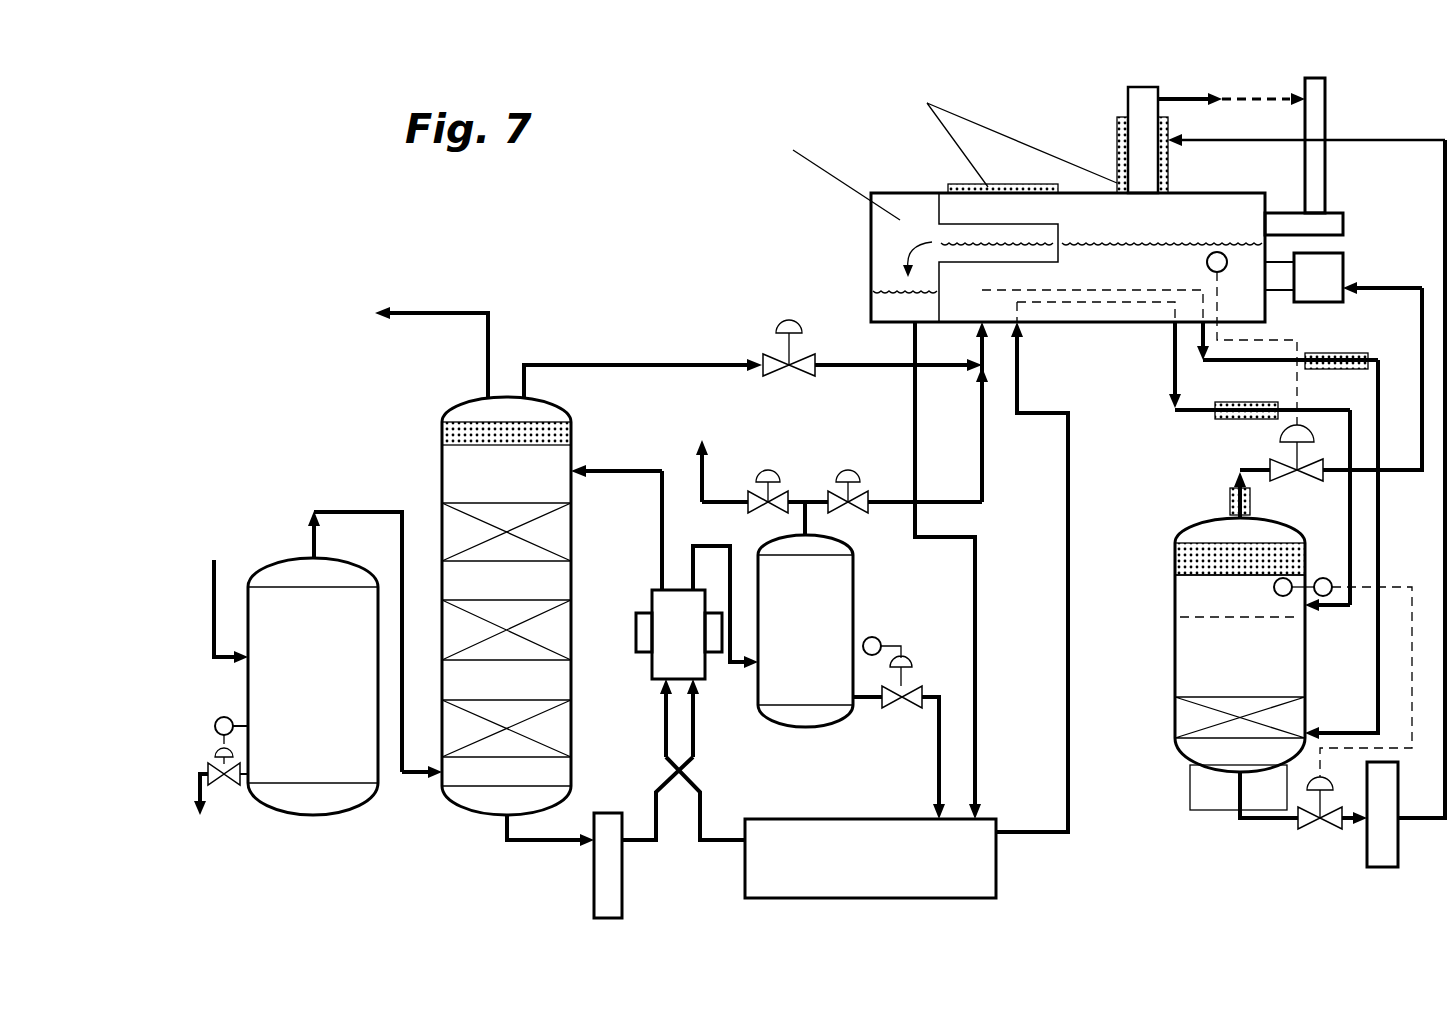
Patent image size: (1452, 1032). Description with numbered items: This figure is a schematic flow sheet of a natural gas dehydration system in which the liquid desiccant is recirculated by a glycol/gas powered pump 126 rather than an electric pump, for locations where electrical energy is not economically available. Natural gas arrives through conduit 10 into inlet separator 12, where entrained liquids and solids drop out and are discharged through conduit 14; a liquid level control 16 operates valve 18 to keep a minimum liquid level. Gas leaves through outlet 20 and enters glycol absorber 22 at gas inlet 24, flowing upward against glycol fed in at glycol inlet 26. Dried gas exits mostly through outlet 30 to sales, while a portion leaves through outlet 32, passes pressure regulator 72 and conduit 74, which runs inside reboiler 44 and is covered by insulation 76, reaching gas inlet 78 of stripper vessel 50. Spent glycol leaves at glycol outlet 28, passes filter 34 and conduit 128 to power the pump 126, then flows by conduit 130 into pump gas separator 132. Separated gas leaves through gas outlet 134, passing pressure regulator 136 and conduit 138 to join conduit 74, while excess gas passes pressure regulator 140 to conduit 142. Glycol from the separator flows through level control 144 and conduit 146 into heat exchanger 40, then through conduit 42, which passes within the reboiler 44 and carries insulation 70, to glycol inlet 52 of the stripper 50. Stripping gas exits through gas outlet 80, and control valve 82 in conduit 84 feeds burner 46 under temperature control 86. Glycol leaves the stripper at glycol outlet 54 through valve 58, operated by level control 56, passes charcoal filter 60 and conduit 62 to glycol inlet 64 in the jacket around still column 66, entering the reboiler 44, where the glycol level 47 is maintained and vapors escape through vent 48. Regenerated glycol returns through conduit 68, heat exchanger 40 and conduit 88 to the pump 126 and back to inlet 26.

The conduit 10 is at (212, 606).
The inlet separator 12 is at (285, 560).
The conduit 14 is at (198, 795).
The liquid level control 16 is at (217, 720).
The valve 18 is at (242, 776).
The outlet 20 is at (318, 548).
The glycol absorber 22 is at (440, 480).
The gas inlet 24 is at (410, 777).
The glycol inlet 26 is at (607, 475).
The glycol outlet 28 is at (503, 831).
The outlet 30 is at (485, 372).
The outlet 32 is at (638, 360).
The filter 34 is at (615, 823).
The heat exchanger 40 is at (797, 816).
The conduit 42 is at (1133, 302).
The reboiler 44 is at (905, 202).
The burner 46 is at (1325, 270).
The level of glycol 47 is at (1102, 242).
The vent 48 is at (1318, 115).
The stripper vessel 50 is at (1175, 598).
The glycol inlet 52 is at (1340, 608).
The glycol outlet 54 is at (1238, 793).
The level control 56 is at (1327, 575).
The valve 58 is at (1320, 820).
The charcoal filter 60 is at (1387, 828).
The conduit 62 is at (1445, 578).
The glycol inlet 64 is at (1187, 135).
The still column 66 is at (1142, 105).
The conduit 68 is at (979, 560).
The insulation 70 is at (1228, 402).
The pressure regulator 72 is at (770, 352).
The conduit 74 is at (862, 360).
The insulation 76 is at (1335, 357).
The gas inlet 78 is at (1355, 730).
The gas outlet 80 is at (1230, 505).
The control valve 82 is at (1313, 463).
The conduit 84 is at (1393, 287).
The temperature control 86 is at (1228, 262).
The conduit 88 is at (703, 788).
The glycol/gas powered pump 126 is at (677, 657).
The conduit 128 is at (655, 787).
The conduit 130 is at (700, 547).
The pump gas separator 132 is at (857, 628).
The gas outlet 134 is at (808, 518).
The pressure regulator 136 is at (863, 490).
The pressure regulator 140 is at (783, 492).
The conduit 138 is at (983, 442).
The conduit 142 is at (700, 475).
The level control 144 is at (912, 700).
The conduit 146 is at (935, 762).